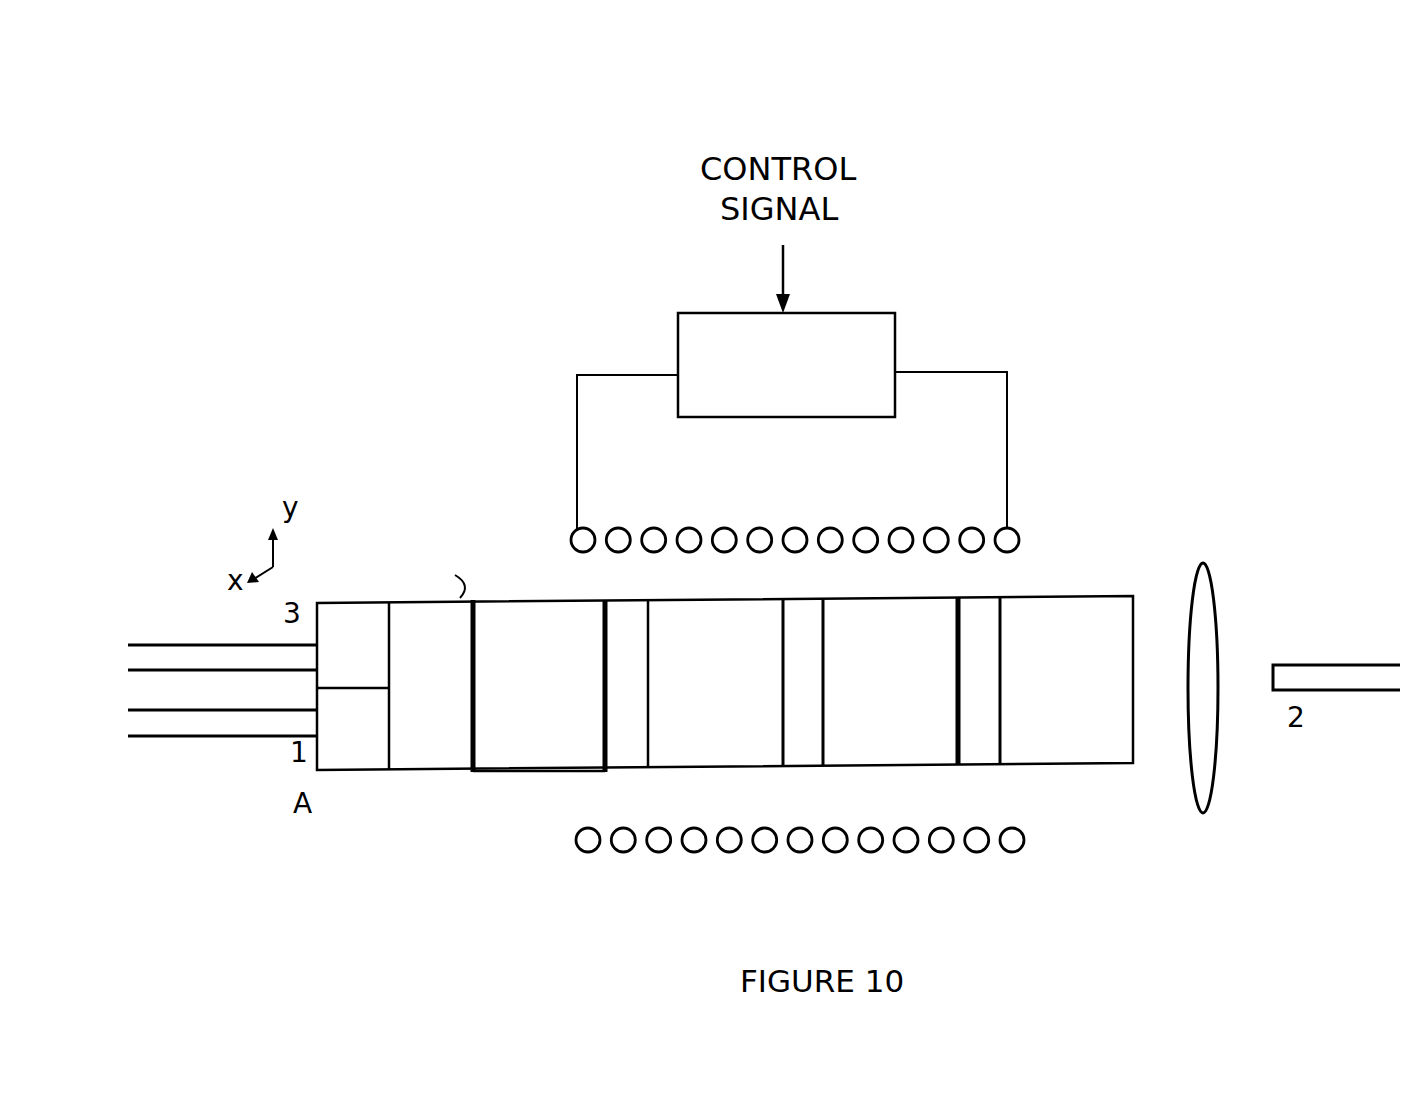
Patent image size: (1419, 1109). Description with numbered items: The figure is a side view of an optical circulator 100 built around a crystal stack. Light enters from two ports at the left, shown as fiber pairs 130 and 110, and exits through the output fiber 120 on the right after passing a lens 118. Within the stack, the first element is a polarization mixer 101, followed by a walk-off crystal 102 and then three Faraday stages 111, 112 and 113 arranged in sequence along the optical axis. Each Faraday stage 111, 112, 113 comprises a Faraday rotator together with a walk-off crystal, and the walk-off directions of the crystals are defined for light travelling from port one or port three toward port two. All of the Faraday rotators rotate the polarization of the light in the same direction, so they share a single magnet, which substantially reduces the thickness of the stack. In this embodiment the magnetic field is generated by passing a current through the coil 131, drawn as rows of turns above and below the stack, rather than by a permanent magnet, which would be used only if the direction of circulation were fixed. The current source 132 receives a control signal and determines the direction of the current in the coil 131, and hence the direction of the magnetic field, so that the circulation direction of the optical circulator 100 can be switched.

The optical circulator 100 is at (1142, 536).
The polarization mixer 101 is at (412, 771).
The walk-off crystal 102 is at (540, 772).
The input optical fiber 110 is at (165, 736).
The Faraday stage 111 is at (700, 767).
The Faraday stage 112 is at (880, 764).
The Faraday stage 113 is at (1050, 764).
The lens 118 is at (1211, 787).
The output optical fiber 120 is at (1318, 665).
The input optical fiber 130 is at (165, 644).
The coil 131 is at (772, 530).
The current source 132 is at (895, 332).